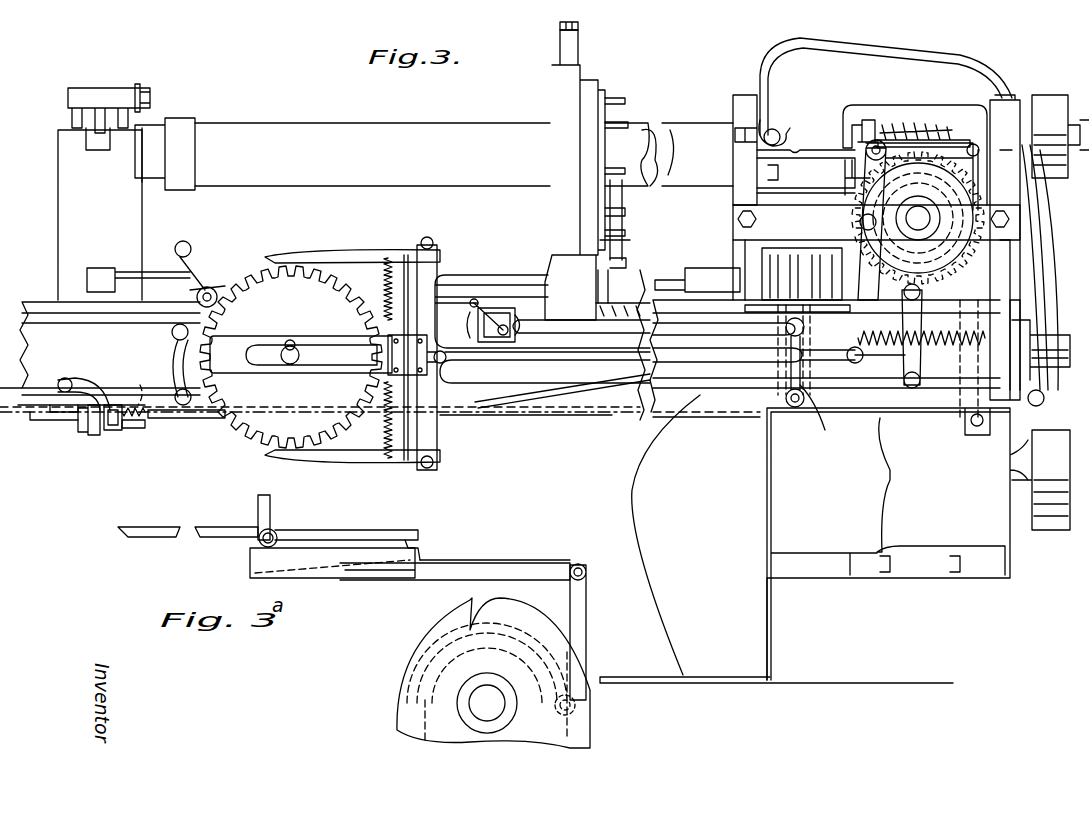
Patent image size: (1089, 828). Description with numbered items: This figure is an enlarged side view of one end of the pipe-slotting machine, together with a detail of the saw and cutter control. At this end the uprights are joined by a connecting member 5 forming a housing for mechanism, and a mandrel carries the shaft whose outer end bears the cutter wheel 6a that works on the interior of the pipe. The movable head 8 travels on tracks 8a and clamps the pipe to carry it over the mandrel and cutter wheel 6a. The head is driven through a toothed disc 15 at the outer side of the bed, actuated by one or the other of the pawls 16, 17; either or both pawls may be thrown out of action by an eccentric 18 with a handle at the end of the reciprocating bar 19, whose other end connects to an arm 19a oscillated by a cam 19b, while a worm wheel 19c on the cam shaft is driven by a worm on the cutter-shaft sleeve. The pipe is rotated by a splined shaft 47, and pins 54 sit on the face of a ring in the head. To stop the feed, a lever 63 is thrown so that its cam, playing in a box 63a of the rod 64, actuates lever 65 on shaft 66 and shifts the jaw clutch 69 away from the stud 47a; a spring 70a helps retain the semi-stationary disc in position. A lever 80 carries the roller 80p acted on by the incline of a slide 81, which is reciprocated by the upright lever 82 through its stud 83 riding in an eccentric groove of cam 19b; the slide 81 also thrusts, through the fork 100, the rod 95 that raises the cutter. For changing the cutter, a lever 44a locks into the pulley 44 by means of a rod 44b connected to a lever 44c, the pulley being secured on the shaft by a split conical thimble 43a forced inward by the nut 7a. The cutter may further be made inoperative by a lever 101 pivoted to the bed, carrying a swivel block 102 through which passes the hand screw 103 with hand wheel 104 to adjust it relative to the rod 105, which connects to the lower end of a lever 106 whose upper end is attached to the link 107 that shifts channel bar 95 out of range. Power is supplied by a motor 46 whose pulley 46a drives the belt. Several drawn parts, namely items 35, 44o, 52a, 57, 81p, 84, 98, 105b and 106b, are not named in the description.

In FIG. 3, the connecting member 5 is at (880, 52).
In FIG. 3, the cutter wheel 6a is at (150, 122).
In FIG. 3, the saw 7a is at (140, 86).
In FIG. 3, the movable head 8 is at (552, 206).
In FIG. 3, the tracks 8a is at (447, 305).
In FIG. 3, the toothed disc 15 is at (256, 432).
In FIG. 3, the pawl 16 is at (338, 250).
In FIG. 3, the pawl 17 is at (338, 462).
In FIG. 3, the eccentric 18 is at (445, 374).
In FIG. 3, the reciprocating bar 19 is at (553, 360).
In FIG. 3, the arm 19a is at (862, 260).
In FIG. 3, the cam 19b is at (975, 212).
In FIG. 3A, the cam 19b is at (408, 642).
In FIG. 3, the worm wheel 19c is at (1010, 262).
In FIG. 3, the lever 35 is at (183, 323).
In FIG. 3, the split conical thimble 43a is at (918, 122).
In FIG. 3, the pulley 44 is at (1048, 112).
In FIG. 3, the lever 44a is at (1035, 288).
In FIG. 3, the rod 44b is at (598, 420).
In FIG. 3, the lever 44c is at (70, 418).
In FIG. 3, the stop 44o is at (143, 377).
In FIG. 3, the motor 46 is at (920, 462).
In FIG. 3, the pulley 46a is at (1050, 530).
In FIG. 3, the splined shaft 47 is at (692, 268).
In FIG. 3, the stud 47a is at (855, 286).
In FIG. 3, the cap 52a is at (580, 26).
In FIG. 3, the pins 54 is at (626, 108).
In FIG. 3, the pin 57 is at (626, 246).
In FIG. 3, the lever 63 is at (478, 300).
In FIG. 3, the box 63a is at (512, 345).
In FIG. 3, the rod 64 is at (590, 328).
In FIG. 3, the lever 65 is at (831, 394).
In FIG. 3, the shaft 66 is at (795, 410).
In FIG. 3, the jaw clutch 69 is at (796, 280).
In FIG. 3, the spring 70a is at (733, 252).
In FIG. 3, the lever 80 is at (757, 92).
In FIG. 3A, the lever 80 is at (258, 508).
In FIG. 3A, the roller 80p is at (278, 535).
In FIG. 3, the slide 81 is at (818, 155).
In FIG. 3A, the slide 81 is at (368, 578).
In FIG. 3, the hook 81p is at (790, 130).
In FIG. 3, the upright lever 82 is at (975, 290).
In FIG. 3A, the upright lever 82 is at (586, 622).
In FIG. 3A, the stud 83 is at (577, 706).
In FIG. 3, the frame 84 is at (58, 240).
In FIG. 3, the rod 95 is at (858, 128).
In FIG. 3A, the rod 95 is at (372, 528).
In FIG. 3A, the blade 98 is at (136, 538).
In FIG. 3, the fork 100 is at (876, 135).
In FIG. 3A, the fork 100 is at (425, 548).
In FIG. 3, the lever 101 is at (80, 378).
In FIG. 3, the swivel block 102 is at (120, 430).
In FIG. 3, the hand screw 103 is at (146, 425).
In FIG. 3, the hand wheel 104 is at (92, 436).
In FIG. 3, the rod 105 is at (208, 420).
In FIG. 3, the bar 105b is at (716, 388).
In FIG. 3, the lever 106 is at (912, 185).
In FIG. 3, the spring 106b is at (912, 356).
In FIG. 3, the link 107 is at (860, 182).